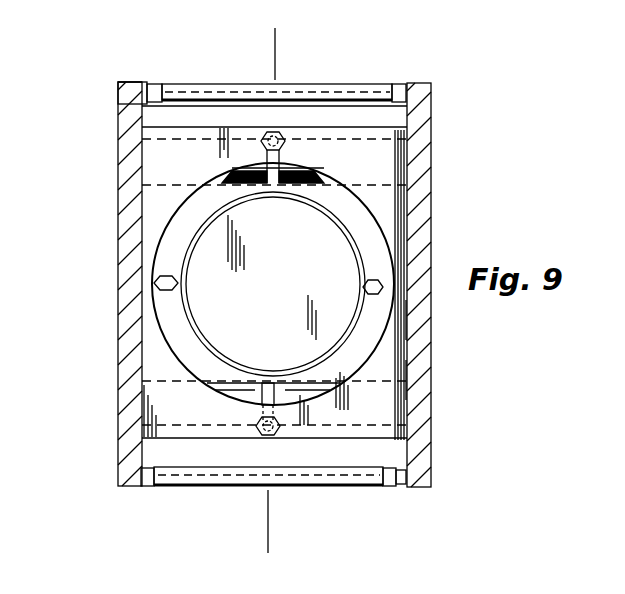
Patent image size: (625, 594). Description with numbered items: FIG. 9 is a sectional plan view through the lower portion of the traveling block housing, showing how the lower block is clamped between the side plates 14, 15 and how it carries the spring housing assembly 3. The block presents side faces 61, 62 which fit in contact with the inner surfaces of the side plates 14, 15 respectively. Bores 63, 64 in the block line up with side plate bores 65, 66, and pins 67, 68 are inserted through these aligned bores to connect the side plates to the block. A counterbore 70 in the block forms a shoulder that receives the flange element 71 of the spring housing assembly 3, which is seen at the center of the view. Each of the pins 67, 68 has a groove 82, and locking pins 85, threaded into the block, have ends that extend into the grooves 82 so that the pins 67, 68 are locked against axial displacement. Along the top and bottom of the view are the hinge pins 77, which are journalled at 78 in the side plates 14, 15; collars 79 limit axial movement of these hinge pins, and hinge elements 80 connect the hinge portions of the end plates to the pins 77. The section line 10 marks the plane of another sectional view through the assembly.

The section line 10 is at (277, 27).
The side plate 14 is at (118, 298).
The side face 61 is at (128, 223).
The side plate bore 65 is at (124, 372).
The side plate 15 is at (424, 230).
The side face 62 is at (406, 318).
The side plate bore 66 is at (422, 376).
The bore 64 is at (382, 200).
The pin 68 is at (382, 160).
The counterbore 70 is at (386, 260).
The flange element 71 is at (364, 336).
The spring housing assembly 3 is at (302, 325).
The bore 63 is at (384, 362).
The groove 82 is at (270, 380).
The pin 67 is at (384, 400).
The locking pin 85 is at (282, 136).
The hinge pin 77 is at (350, 472).
The hinge element 80 is at (342, 487).
The collar 79 is at (392, 488).
The journal 78 is at (420, 463).